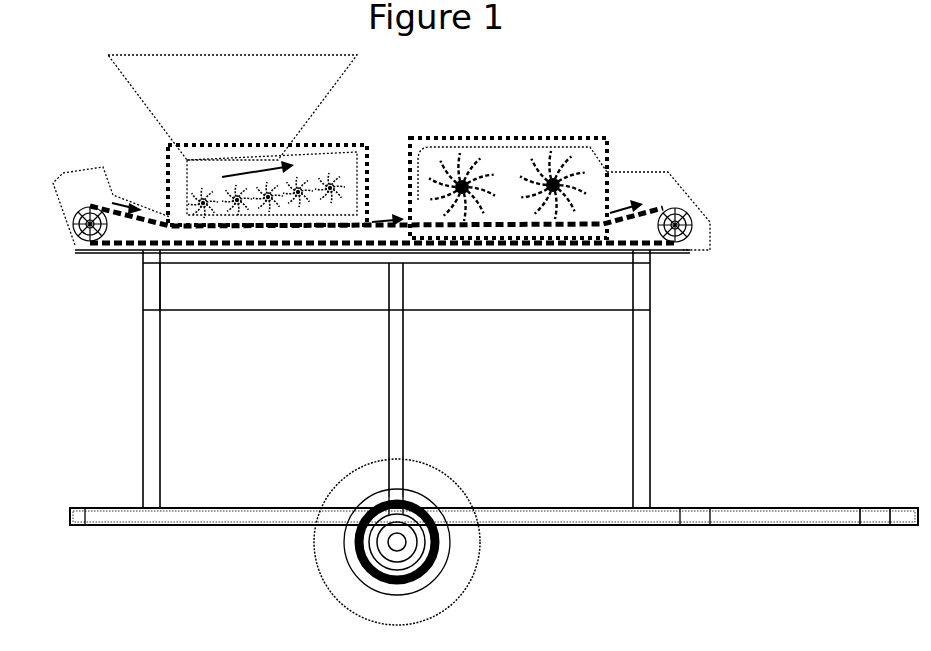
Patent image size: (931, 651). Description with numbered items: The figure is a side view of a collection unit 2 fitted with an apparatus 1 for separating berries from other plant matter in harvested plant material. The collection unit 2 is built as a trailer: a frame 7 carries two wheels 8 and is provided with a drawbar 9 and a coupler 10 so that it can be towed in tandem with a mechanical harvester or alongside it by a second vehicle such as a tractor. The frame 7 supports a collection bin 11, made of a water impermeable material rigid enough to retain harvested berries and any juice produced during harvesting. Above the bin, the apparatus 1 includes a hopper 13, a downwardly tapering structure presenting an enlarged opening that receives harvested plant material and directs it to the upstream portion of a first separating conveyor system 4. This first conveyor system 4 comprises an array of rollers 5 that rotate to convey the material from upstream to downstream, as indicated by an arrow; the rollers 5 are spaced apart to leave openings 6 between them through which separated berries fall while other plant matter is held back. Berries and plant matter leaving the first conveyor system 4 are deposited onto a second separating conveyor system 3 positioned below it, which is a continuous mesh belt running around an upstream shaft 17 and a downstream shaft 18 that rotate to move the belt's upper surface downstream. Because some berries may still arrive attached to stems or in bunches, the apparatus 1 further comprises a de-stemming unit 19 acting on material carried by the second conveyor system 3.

The apparatus 1 is at (630, 130).
The collection unit 2 is at (678, 356).
The second separating conveyor system 3 is at (656, 198).
The first separating conveyor system 4 is at (347, 134).
The rollers 5 is at (200, 192).
The openings 6 is at (313, 185).
The frame 7 is at (643, 450).
The wheels 8 is at (450, 565).
The drawbar 9 is at (770, 508).
The coupler 10 is at (900, 508).
The collection bin 11 is at (235, 392).
The hopper 13 is at (160, 70).
The upstream shaft 17 is at (82, 240).
The downstream shaft 18 is at (682, 243).
The de-stemming unit 19 is at (503, 160).